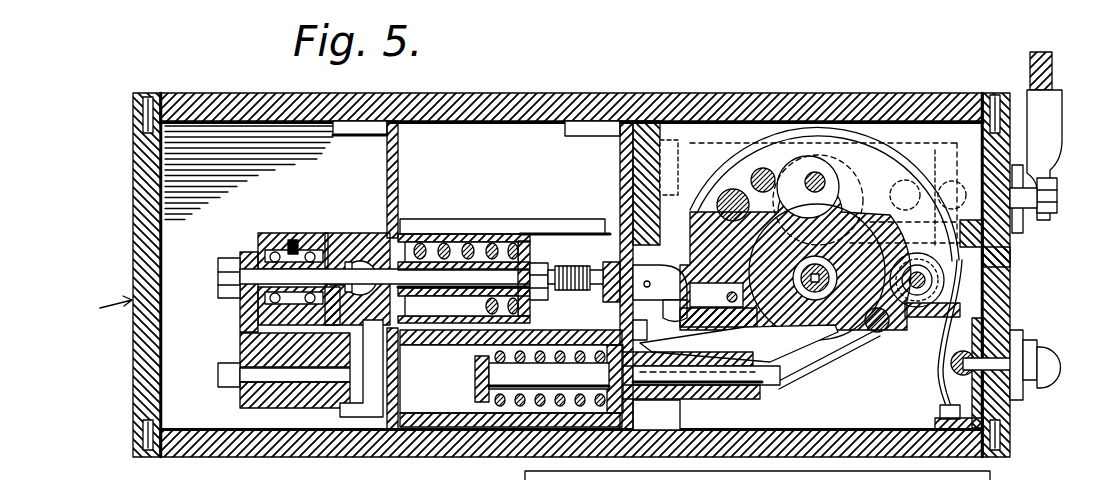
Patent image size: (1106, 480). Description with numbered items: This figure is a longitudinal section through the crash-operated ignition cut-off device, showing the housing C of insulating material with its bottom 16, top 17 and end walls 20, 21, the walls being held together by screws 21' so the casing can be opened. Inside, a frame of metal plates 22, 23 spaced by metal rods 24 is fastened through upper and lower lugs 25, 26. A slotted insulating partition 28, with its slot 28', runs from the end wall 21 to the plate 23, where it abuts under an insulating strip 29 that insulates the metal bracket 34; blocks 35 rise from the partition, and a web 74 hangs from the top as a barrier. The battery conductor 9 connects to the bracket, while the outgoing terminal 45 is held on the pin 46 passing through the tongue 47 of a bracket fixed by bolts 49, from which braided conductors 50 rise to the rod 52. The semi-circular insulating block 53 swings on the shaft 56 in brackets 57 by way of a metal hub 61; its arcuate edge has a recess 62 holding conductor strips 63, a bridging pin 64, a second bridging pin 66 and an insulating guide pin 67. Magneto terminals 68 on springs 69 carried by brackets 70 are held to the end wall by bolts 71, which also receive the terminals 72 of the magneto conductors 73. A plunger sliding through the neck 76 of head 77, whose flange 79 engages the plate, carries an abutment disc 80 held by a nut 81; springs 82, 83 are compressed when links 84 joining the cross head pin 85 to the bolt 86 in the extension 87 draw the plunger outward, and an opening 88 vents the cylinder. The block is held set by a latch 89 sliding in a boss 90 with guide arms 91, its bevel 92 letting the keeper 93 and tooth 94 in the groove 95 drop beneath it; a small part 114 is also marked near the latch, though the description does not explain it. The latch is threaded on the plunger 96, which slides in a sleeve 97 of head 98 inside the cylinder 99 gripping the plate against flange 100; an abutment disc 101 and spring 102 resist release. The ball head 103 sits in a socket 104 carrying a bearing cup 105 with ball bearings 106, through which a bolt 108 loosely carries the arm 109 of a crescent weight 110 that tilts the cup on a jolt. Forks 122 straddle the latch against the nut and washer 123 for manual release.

The conductor 9 is at (282, 217).
The bottom 16 is at (296, 457).
The top 17 is at (494, 93).
The end wall 20 is at (132, 180).
The end wall 21 is at (1023, 275).
The screws 21' is at (572, 259).
The metal plate 22 is at (402, 157).
The metal plate 23 is at (620, 180).
The metal rods 24 is at (456, 233).
The lugs 25 is at (357, 135).
The lugs 26 is at (565, 136).
The partition 28 is at (1033, 207).
The slot 28' is at (1025, 260).
The strip of insulating material 29 is at (626, 141).
The metal bracket 34 is at (668, 125).
The blocks 35 is at (856, 128).
The terminal 45 is at (1055, 386).
The terminal pin or bolt 46 is at (1005, 333).
The upstanding tongue 47 is at (960, 333).
The bolts 49 is at (935, 414).
The conductors 50 is at (938, 378).
The rod 52 is at (916, 270).
The block of insulating material 53 is at (752, 329).
The shaft 56 is at (806, 331).
The brackets 57 is at (668, 338).
The hub or bushing 61 is at (872, 239).
The slot or recess 62 is at (1012, 275).
The conductor strips 63 is at (872, 180).
The pin 64 is at (810, 172).
The second bridging pin 66 is at (733, 188).
The pin 67 is at (764, 168).
The terminals 68 is at (905, 180).
The springs 69 is at (940, 172).
The metal brackets 70 is at (952, 180).
The bolts 71 is at (1058, 185).
The terminals 72 is at (1045, 130).
The conductors 73 is at (1055, 70).
The web 74 is at (884, 128).
The sleeve or neck 76 is at (757, 400).
The head 77 is at (662, 399).
The flange 79 is at (645, 457).
The abutment disc 80 is at (482, 457).
The nut 81 is at (477, 392).
The spring 82 is at (475, 358).
The inner spring 83 is at (475, 376).
The links 84 is at (832, 357).
The cross head or pin 85 is at (778, 382).
The pin or bolt 86 is at (880, 336).
The extension 87 is at (898, 328).
The opening 88 is at (393, 376).
The latch or dog 89 is at (657, 276).
The boss 90 is at (625, 205).
The arms 91 is at (740, 251).
The beveled upper face 92 is at (698, 250).
The keeper 93 is at (817, 272).
The tooth 94 is at (718, 305).
The groove 95 is at (686, 210).
The rod or plunger 96 is at (567, 268).
The sleeve 97 is at (493, 240).
The head 98 is at (416, 240).
The cylinder 99 is at (480, 238).
The flange 100 is at (406, 235).
The abutment disc 101 is at (537, 220).
The spring 102 is at (440, 238).
The vehicle head 103 is at (358, 260).
The socket 104 is at (309, 350).
The bearing cup 105 is at (262, 233).
The ball bearings 106 is at (316, 235).
The bolt 108 is at (224, 285).
The arm 109 is at (243, 250).
The weight 110 is at (240, 403).
The pin 114 is at (652, 328).
The forks 122 is at (595, 292).
The nut and washer 123 is at (592, 260).
The housing C is at (106, 308).